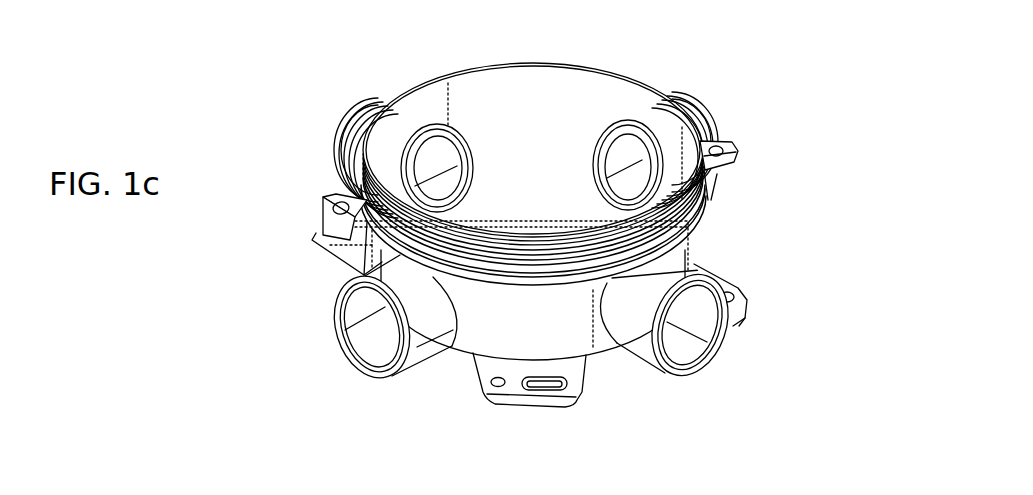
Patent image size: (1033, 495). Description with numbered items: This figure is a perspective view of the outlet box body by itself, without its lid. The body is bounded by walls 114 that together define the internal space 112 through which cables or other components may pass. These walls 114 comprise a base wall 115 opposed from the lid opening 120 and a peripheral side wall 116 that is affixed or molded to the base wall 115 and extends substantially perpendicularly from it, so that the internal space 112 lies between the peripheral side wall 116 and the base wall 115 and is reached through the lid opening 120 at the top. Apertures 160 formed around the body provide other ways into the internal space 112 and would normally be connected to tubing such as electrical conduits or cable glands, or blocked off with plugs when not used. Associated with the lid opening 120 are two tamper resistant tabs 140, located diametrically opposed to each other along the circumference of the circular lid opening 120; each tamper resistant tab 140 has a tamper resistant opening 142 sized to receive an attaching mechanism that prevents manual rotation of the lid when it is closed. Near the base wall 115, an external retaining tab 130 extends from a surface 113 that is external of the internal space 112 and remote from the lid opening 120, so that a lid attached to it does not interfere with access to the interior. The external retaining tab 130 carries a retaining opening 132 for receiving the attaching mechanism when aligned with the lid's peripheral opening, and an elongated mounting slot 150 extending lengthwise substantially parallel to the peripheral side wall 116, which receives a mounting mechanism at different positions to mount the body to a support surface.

The internal space 112 is at (612, 108).
The surface 113 is at (595, 295).
The walls 114 is at (349, 264).
The base wall 115 is at (521, 214).
The peripheral side wall 116 is at (634, 62).
The lid opening 120 is at (535, 85).
The external retaining tab 130 is at (602, 395).
The retaining opening 132 is at (480, 392).
The tamper resistant tab 140 is at (309, 207).
The tamper resistant opening 142 is at (326, 190).
The elongated mounting slot 150 is at (538, 402).
The apertures 160 is at (715, 325).